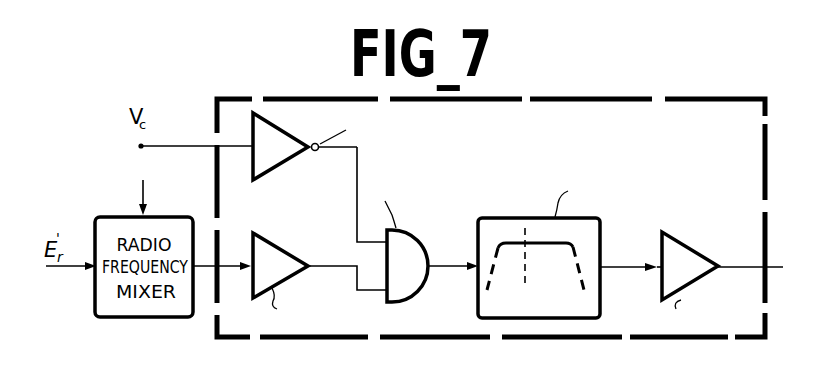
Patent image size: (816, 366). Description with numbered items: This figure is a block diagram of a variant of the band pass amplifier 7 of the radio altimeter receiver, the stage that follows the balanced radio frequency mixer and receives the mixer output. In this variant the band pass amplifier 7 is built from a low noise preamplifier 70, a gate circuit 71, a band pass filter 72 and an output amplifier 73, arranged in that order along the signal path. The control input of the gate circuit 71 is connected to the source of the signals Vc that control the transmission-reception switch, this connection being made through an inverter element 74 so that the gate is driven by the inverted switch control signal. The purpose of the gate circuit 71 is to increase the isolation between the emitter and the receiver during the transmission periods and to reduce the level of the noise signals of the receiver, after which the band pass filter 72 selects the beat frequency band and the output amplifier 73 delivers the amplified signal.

The band pass amplifier 7 is at (605, 97).
The low noise preamplifier 70 is at (276, 243).
The gate circuit 71 is at (422, 245).
The band pass filter 72 is at (534, 217).
The output amplifier 73 is at (687, 243).
The inverter element 74 is at (279, 130).